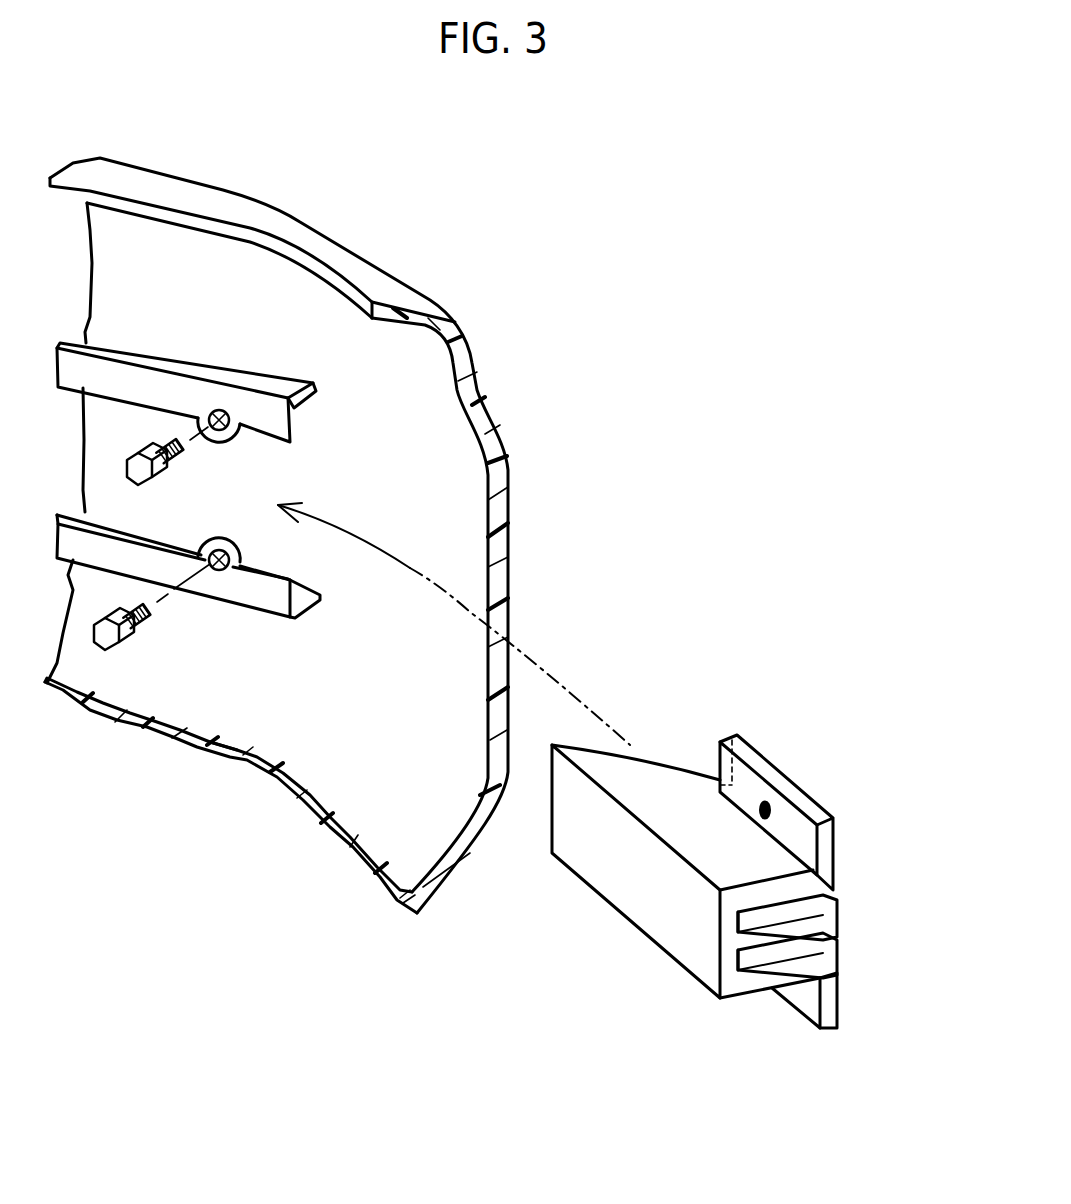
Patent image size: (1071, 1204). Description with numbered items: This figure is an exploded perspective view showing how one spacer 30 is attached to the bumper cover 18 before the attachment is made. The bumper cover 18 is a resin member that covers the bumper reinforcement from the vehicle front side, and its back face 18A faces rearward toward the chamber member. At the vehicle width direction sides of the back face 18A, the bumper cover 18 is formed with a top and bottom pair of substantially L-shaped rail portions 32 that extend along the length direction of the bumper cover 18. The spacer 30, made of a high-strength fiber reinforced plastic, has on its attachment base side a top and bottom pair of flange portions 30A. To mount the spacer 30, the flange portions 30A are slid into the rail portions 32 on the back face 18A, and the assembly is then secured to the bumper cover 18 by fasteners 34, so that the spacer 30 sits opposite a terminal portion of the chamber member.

The bumper cover 18 is at (366, 217).
The back face 18A is at (210, 708).
The spacer 30 is at (667, 967).
The flange portion 30A is at (833, 845).
The rail portion 32 is at (175, 360).
The fastener 34 is at (141, 456).